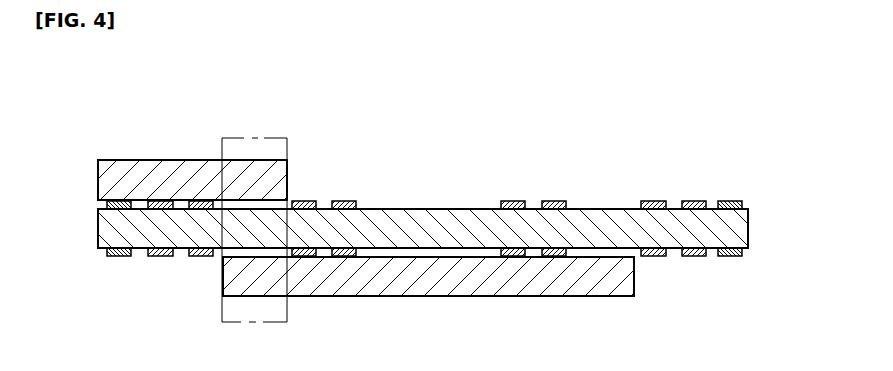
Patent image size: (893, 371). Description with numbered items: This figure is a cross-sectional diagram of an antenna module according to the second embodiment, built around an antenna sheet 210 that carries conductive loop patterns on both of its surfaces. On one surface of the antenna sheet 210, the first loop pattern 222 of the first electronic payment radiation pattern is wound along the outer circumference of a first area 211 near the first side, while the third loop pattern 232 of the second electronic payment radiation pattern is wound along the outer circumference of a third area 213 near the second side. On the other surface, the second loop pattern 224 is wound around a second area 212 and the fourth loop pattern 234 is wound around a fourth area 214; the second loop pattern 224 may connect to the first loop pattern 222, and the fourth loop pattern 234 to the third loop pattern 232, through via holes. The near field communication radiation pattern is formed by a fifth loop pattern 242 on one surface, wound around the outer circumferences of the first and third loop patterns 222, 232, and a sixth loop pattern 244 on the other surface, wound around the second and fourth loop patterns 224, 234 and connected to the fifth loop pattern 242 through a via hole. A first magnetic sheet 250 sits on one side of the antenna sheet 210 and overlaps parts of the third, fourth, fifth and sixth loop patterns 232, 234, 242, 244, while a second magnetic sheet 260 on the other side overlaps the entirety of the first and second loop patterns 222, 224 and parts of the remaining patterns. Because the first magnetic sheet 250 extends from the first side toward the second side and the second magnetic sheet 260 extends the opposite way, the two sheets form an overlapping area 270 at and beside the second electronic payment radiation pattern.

The antenna sheet 210 is at (98, 223).
The first area 211 is at (608, 208).
The second area 212 is at (610, 249).
The third area 213 is at (255, 199).
The fourth area 214 is at (253, 249).
The first loop pattern 222 is at (553, 200).
The second loop pattern 224 is at (550, 257).
The third loop pattern 232 is at (207, 200).
The fourth loop pattern 234 is at (197, 257).
The fifth loop pattern 242 is at (113, 200).
The sixth loop pattern 244 is at (120, 257).
The first magnetic sheet 250 is at (98, 177).
The second magnetic sheet 260 is at (447, 297).
The overlapping area 270 is at (255, 137).